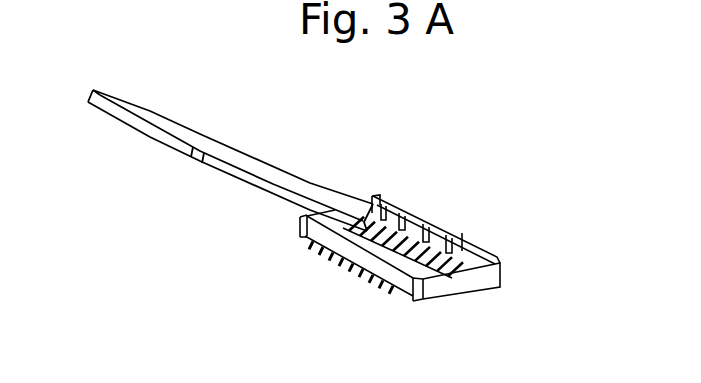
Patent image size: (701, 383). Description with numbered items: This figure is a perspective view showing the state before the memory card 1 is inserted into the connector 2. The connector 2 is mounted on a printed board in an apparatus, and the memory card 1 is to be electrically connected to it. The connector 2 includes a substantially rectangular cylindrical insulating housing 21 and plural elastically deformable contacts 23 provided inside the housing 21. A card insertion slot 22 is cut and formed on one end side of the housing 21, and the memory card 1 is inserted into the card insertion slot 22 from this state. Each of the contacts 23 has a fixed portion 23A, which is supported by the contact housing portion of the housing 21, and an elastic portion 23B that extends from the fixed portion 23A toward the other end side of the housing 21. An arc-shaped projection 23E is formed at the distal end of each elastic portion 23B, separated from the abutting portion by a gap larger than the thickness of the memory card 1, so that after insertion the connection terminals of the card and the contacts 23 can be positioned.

The memory card 1 is at (148, 152).
The connector 2 is at (421, 220).
The insulating housing 21 is at (328, 226).
The card insertion slot 22 is at (360, 195).
The contacts 23 is at (400, 221).
The fixed portion 23A is at (388, 266).
The elastic portion 23B is at (466, 230).
The projection 23E is at (467, 237).